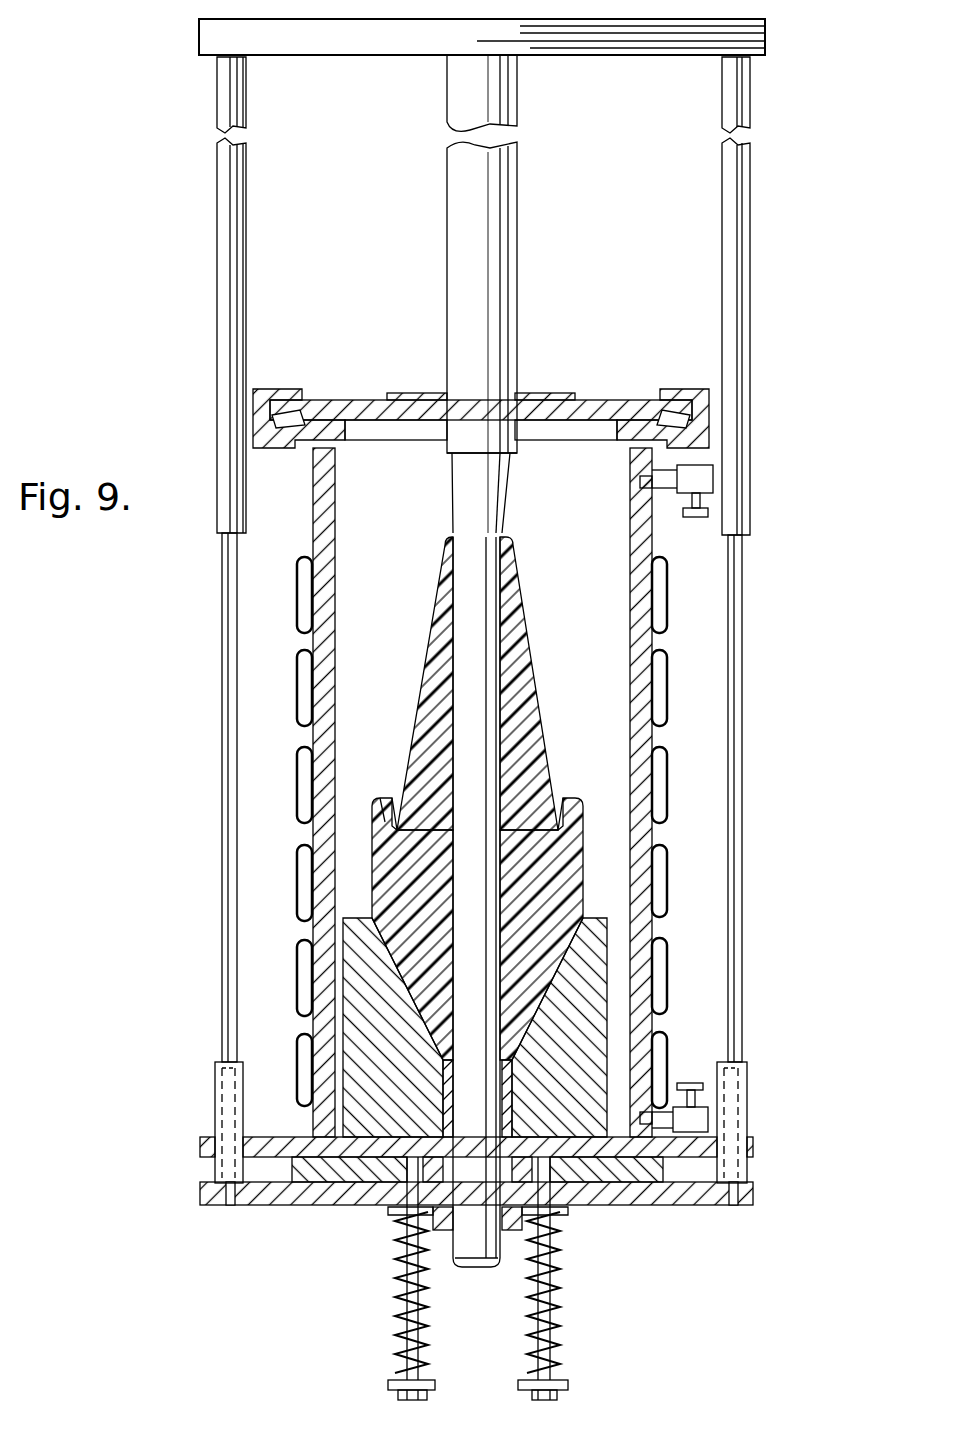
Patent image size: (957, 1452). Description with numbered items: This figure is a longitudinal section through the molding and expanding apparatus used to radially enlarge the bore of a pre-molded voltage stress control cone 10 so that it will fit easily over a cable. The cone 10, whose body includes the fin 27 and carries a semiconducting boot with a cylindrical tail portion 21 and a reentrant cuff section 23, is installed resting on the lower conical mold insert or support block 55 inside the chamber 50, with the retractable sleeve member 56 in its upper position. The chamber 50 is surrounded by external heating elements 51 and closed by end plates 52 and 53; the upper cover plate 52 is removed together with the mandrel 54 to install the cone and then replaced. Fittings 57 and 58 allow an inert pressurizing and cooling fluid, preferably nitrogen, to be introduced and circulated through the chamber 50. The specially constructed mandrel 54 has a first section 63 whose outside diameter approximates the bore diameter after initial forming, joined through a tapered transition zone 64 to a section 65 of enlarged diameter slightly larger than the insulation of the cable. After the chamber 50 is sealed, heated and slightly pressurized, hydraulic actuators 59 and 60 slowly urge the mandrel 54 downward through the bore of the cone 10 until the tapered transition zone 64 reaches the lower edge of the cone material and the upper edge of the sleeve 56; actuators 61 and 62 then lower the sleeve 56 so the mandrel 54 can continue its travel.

The voltage stress control cone 10 is at (565, 766).
The tail portion 21 is at (518, 590).
The reentrant cuff section 23 is at (395, 798).
The fin 27 is at (580, 812).
The chamber 50 is at (652, 540).
The external heating elements 51 is at (672, 830).
The end plate (cover plate) 52 is at (600, 400).
The end plate 53 is at (689, 1160).
The mandrel 54 is at (583, 214).
The lower conical mold insert (support block) 55 is at (600, 1025).
The retractable sleeve member 56 is at (508, 1095).
The fitting 57 is at (695, 473).
The fitting 58 is at (700, 1118).
The hydraulic actuator 59 is at (752, 297).
The hydraulic actuator 60 is at (224, 285).
The actuator 61 is at (748, 1090).
The actuator 62 is at (215, 1095).
The first section of mandrel 63 is at (497, 665).
The tapered transition zone 64 is at (505, 497).
The enlarged diameter section 65 is at (450, 268).